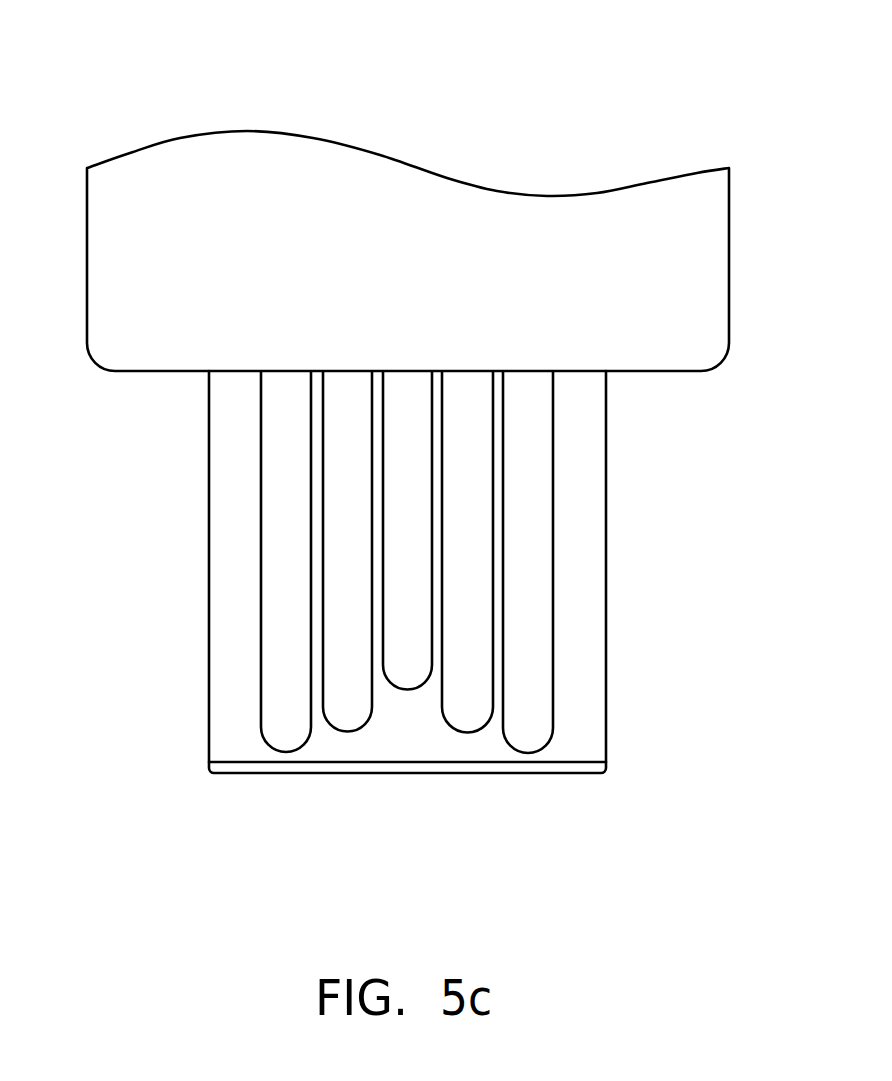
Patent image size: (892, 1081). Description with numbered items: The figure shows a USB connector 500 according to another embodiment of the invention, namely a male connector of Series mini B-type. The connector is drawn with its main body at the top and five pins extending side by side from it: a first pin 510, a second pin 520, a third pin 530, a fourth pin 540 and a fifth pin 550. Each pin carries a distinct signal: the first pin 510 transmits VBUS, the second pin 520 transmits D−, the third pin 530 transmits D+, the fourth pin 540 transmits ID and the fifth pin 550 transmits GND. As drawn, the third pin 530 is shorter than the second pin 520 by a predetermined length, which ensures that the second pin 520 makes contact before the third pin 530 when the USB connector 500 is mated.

The USB connector 500 is at (790, 53).
The first pin 510 is at (525, 737).
The second pin 520 is at (463, 717).
The third pin 530 is at (408, 672).
The fourth pin 540 is at (348, 717).
The fifth pin 550 is at (287, 737).